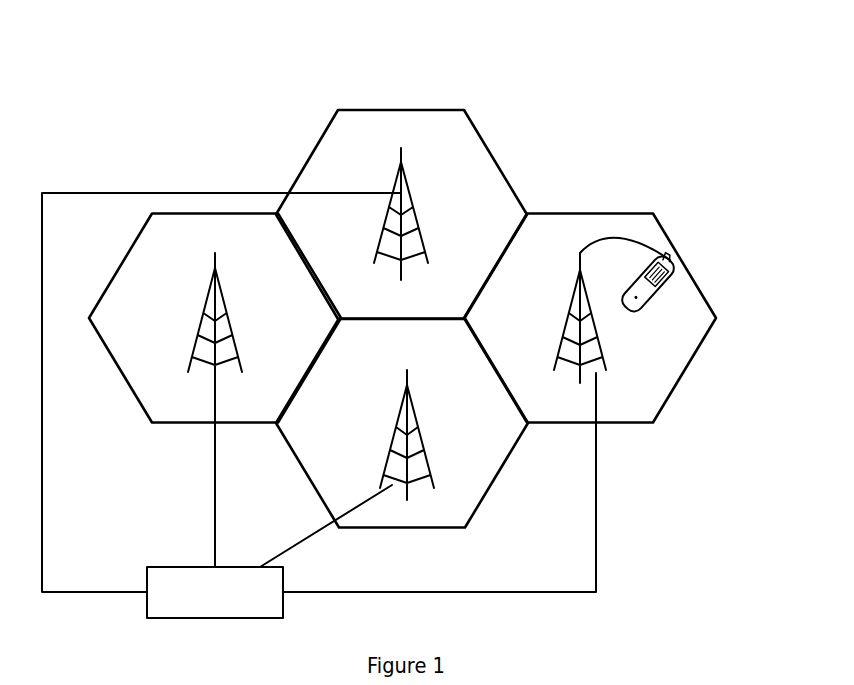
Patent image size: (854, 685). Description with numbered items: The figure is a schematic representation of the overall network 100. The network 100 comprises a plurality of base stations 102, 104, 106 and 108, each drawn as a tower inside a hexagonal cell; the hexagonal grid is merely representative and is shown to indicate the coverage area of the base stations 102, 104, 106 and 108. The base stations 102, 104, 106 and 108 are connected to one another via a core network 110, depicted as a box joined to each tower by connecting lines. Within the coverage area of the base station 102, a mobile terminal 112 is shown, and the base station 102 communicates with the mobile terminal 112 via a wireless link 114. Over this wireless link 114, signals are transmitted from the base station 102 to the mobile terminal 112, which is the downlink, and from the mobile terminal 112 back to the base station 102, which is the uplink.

The network 100 is at (473, 68).
The base station 102 is at (561, 373).
The base station 104 is at (421, 274).
The base station 106 is at (232, 276).
The base station 108 is at (426, 494).
The core network 110 is at (319, 405).
The mobile terminal 112 is at (670, 292).
The wireless link 114 is at (622, 229).